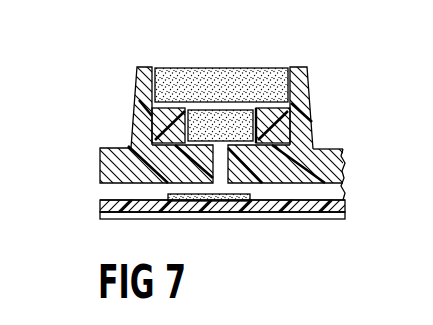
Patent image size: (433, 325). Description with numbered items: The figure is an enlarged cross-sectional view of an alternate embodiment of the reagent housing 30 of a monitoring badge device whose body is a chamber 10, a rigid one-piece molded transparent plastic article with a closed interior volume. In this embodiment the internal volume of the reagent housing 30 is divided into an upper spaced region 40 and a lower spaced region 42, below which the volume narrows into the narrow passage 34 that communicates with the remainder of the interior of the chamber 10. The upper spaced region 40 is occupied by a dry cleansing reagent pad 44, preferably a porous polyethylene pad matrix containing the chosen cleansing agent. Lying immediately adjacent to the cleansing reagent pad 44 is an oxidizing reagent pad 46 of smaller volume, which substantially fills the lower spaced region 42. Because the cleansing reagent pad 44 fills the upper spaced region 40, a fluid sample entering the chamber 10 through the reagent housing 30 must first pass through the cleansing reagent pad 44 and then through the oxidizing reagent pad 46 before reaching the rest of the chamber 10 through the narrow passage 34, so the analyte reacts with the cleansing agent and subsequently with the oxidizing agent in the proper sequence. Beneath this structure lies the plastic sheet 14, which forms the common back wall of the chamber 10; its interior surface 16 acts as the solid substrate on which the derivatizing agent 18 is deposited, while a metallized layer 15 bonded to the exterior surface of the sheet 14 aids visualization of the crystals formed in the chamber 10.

The chamber 10 is at (312, 93).
The plastic sheet 14 is at (328, 212).
The metallized layer 15 is at (263, 216).
The interior surface 16 is at (105, 199).
The derivatizing agent 18 is at (206, 203).
The reagent housing 30 is at (136, 64).
The narrow passage 34 is at (218, 167).
The upper spaced region 40 is at (290, 67).
The lower spaced region 42 is at (257, 119).
The cleansing reagent pad 44 is at (223, 72).
The oxidizing reagent pad 46 is at (190, 124).